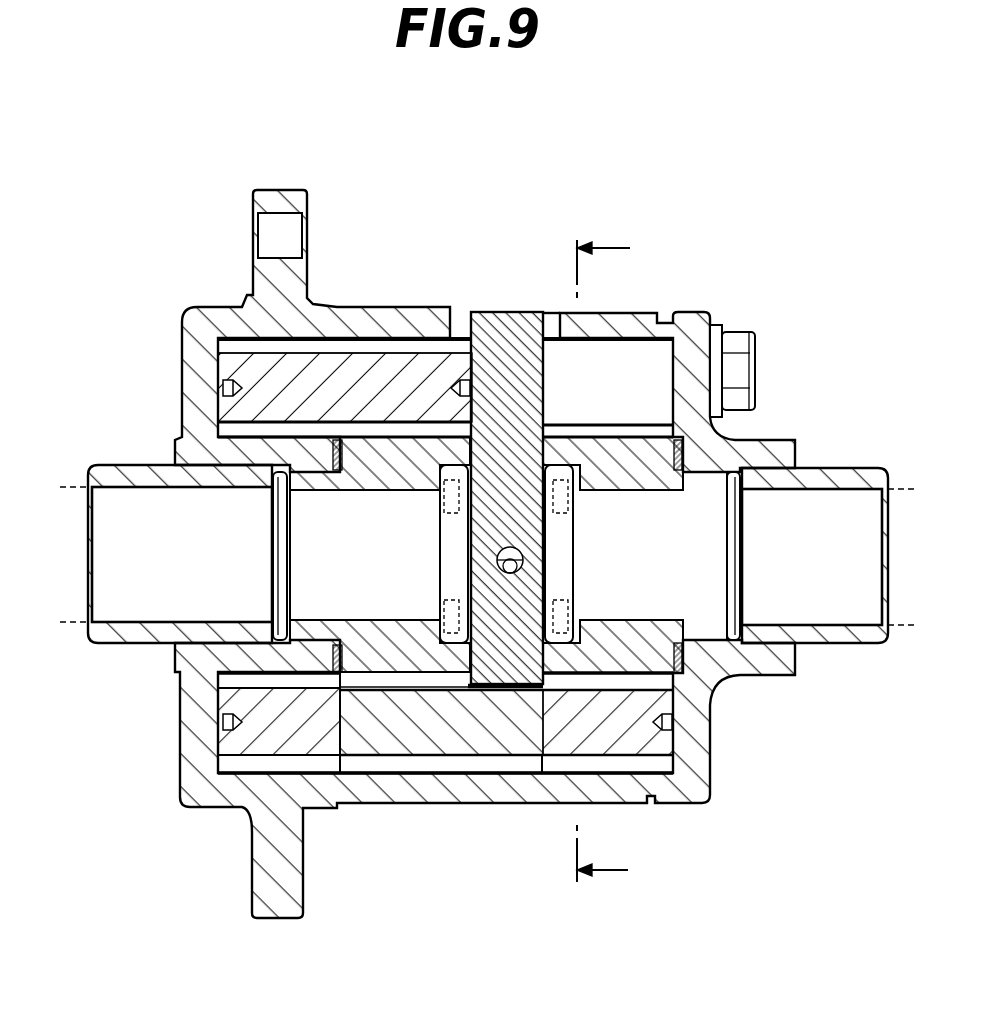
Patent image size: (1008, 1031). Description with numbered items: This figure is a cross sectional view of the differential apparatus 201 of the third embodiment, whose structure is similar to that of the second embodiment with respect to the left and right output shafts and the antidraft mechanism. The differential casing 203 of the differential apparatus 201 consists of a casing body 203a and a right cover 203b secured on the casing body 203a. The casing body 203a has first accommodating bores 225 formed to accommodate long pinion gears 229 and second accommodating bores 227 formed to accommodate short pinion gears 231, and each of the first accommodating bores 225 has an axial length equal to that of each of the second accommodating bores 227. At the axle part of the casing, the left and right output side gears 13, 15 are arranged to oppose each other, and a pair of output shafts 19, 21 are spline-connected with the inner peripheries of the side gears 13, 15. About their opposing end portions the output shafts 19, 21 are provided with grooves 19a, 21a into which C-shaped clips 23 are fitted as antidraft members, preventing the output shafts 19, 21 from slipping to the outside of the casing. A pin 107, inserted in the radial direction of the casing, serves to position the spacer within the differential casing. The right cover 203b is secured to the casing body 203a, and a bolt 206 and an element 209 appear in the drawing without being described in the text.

The differential apparatus 201 is at (477, 537).
The differential casing 203 is at (485, 537).
The casing body 203a is at (372, 307).
The right cover 203b is at (690, 312).
The bolt 206 is at (748, 360).
The ring gear 209 is at (512, 325).
The second accommodating bores 227 is at (400, 355).
The short pinion gears 231 is at (238, 410).
The long pinion gears 229 is at (222, 745).
The first accommodating bores 225 is at (505, 760).
The output shaft 19 is at (85, 622).
The output shaft 21 is at (890, 627).
The groove 19a is at (448, 505).
The groove 21a is at (565, 507).
The C-shaped clips 23 is at (448, 612).
The left output side gear 13 is at (380, 663).
The right output side gear 15 is at (615, 662).
The pin 107 is at (505, 575).